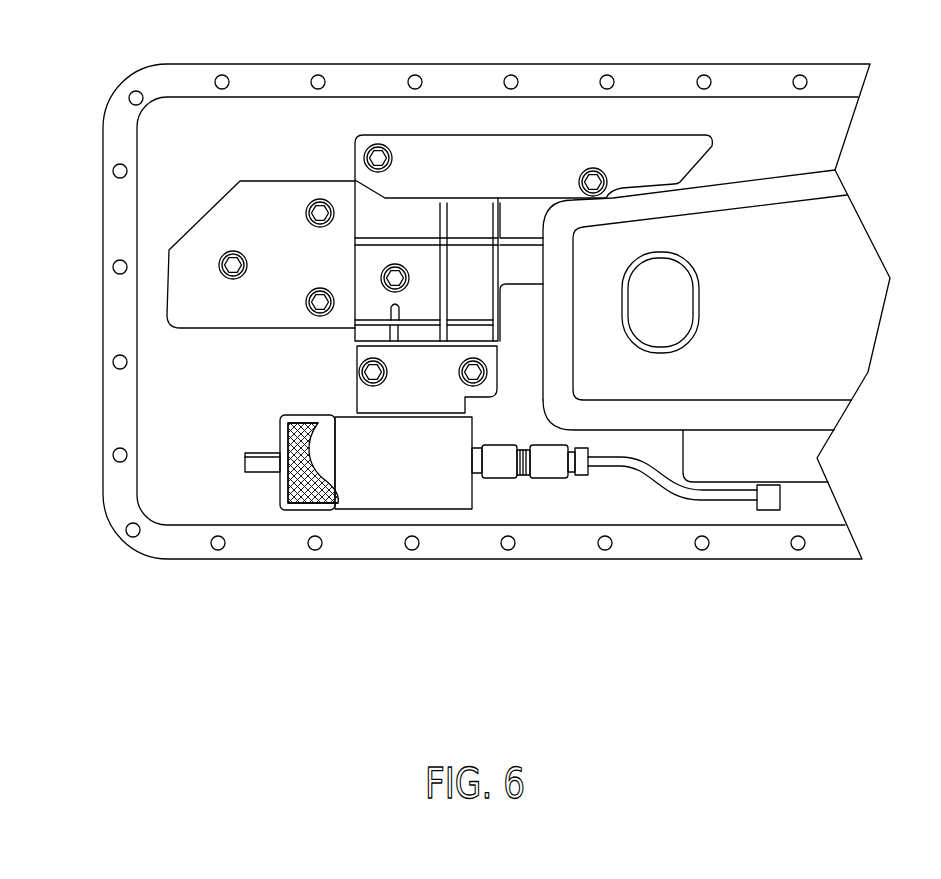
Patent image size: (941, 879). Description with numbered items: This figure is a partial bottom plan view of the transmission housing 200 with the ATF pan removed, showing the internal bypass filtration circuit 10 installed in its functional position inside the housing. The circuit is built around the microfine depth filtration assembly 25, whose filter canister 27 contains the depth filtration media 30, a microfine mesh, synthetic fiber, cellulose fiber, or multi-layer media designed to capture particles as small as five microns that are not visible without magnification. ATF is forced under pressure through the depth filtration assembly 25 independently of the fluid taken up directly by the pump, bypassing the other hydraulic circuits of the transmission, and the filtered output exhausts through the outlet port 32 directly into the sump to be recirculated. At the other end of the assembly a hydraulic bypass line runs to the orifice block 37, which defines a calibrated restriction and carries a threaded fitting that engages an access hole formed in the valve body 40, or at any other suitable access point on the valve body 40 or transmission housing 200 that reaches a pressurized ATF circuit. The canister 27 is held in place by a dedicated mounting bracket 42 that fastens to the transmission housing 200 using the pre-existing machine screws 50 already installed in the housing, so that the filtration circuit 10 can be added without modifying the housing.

The internal bypass filtration circuit 10 is at (520, 505).
The microfine depth filtration assembly 25 is at (452, 504).
The filter canister 27 is at (403, 478).
The depth filtration media 30 is at (300, 424).
The outlet port 32 is at (244, 461).
The orifice block 37 is at (780, 497).
The valve body 40 is at (783, 471).
The mounting bracket 42 is at (432, 400).
The machine screws 50 is at (360, 371).
The transmission housing 200 is at (430, 233).